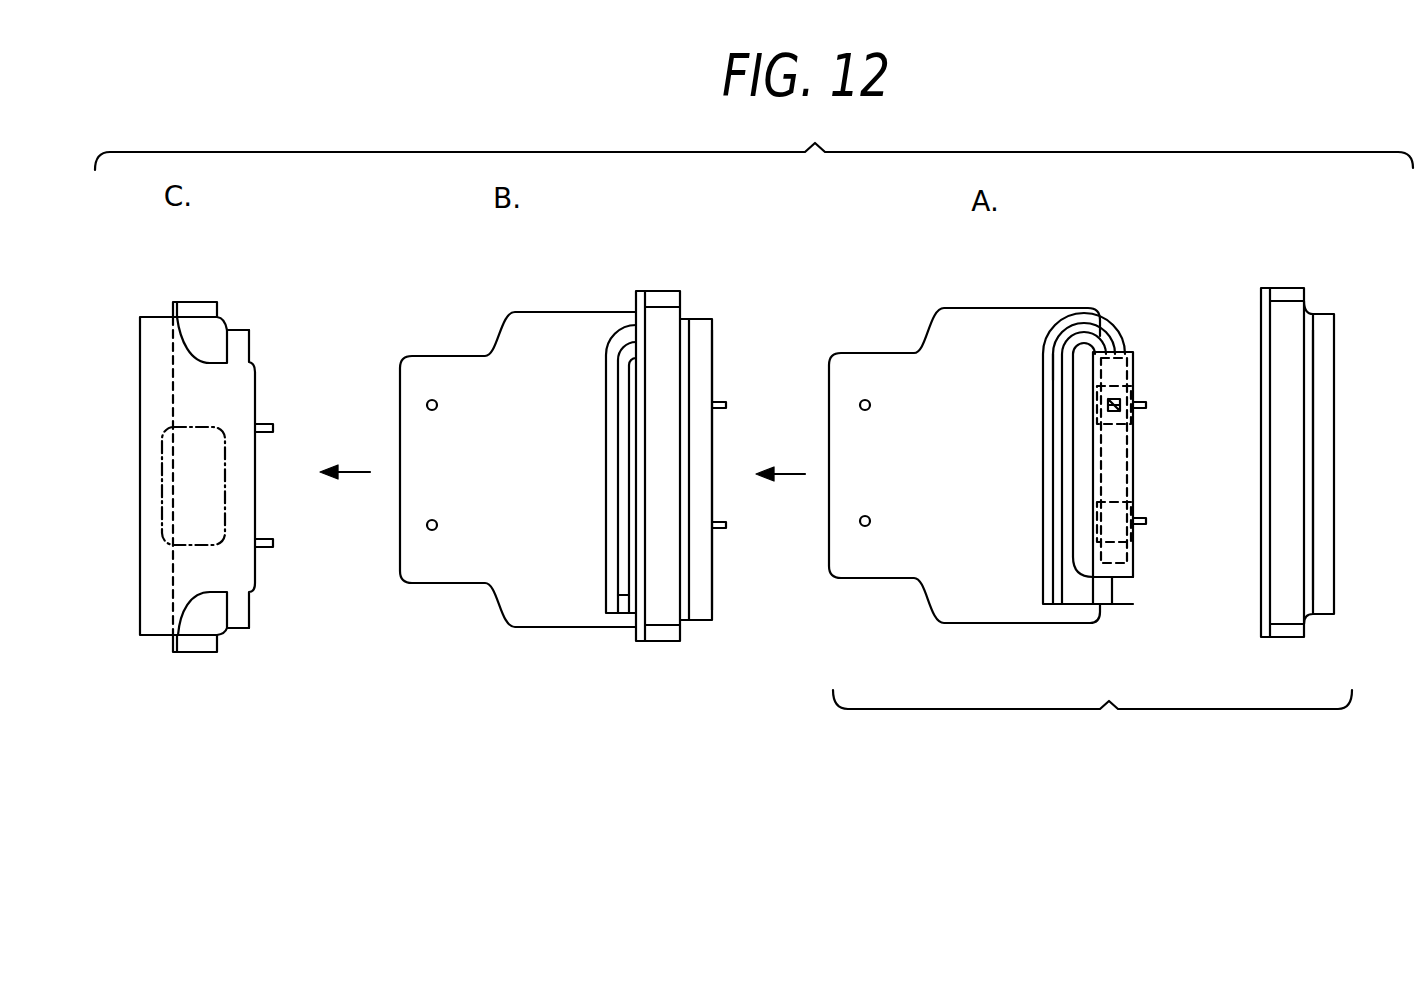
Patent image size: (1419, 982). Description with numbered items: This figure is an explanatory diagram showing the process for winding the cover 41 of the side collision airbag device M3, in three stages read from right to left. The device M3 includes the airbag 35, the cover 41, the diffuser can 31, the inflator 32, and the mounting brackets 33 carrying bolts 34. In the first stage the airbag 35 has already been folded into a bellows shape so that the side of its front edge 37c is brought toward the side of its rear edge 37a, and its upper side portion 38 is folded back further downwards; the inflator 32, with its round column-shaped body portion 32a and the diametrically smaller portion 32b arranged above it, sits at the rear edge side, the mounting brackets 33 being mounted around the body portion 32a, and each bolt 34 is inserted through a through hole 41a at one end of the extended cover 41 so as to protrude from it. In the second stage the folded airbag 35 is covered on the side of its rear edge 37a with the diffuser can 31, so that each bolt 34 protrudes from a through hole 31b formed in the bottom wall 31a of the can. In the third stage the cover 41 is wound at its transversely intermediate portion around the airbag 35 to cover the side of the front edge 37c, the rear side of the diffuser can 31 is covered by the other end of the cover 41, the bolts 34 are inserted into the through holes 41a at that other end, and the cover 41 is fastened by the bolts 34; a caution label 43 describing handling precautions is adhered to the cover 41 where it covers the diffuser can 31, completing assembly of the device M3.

The diffuser can 31 is at (196, 330).
The bottom wall 31a is at (1336, 466).
The through holes 31b is at (715, 402).
The inflator 32 is at (1115, 588).
The body portion 32a is at (1112, 478).
The diametrically smaller portion 32b is at (1055, 340).
The mounting brackets 33 is at (1099, 405).
The bolts 34 is at (275, 428).
The airbag 35 is at (618, 598).
The rear edge 37a is at (1133, 604).
The front edge 37c is at (606, 465).
The upper side portion 38 is at (1109, 326).
The cover 41 is at (563, 333).
The through holes 41a is at (264, 424).
The caution label 43 is at (185, 536).
The side collision airbag device M3 is at (177, 687).